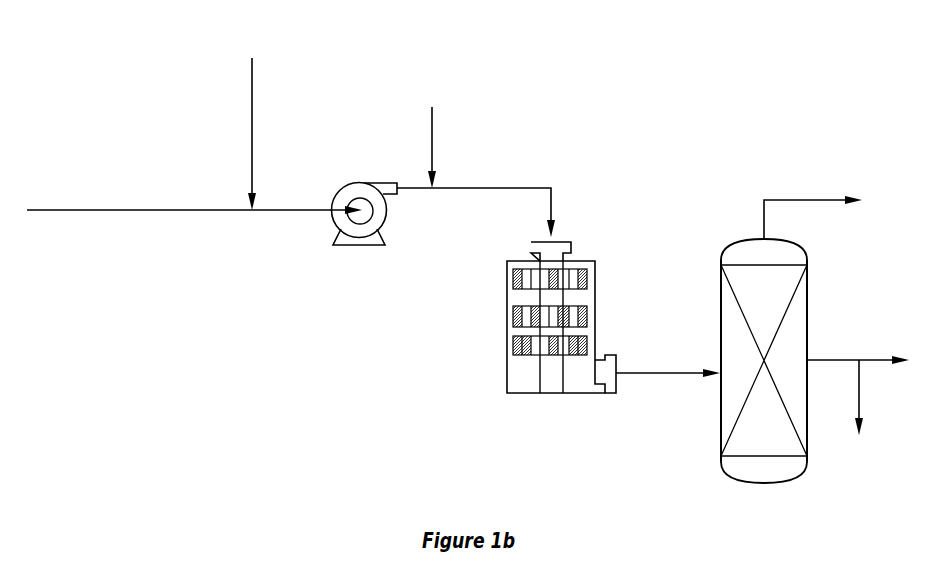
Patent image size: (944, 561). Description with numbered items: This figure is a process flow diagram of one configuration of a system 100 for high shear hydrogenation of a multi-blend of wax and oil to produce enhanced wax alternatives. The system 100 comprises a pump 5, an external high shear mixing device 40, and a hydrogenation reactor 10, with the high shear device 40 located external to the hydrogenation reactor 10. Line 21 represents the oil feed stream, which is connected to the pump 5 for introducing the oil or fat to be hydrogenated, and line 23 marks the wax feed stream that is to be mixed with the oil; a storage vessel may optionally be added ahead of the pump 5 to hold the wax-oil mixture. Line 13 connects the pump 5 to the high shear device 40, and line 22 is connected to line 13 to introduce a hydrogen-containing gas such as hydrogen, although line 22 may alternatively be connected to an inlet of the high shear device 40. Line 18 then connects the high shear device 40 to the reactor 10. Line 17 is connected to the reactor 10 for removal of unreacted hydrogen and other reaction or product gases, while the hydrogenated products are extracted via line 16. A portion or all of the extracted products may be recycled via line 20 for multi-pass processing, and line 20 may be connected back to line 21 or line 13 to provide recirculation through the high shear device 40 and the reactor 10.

The system 100 is at (690, 84).
The oil feed stream line 21 is at (155, 210).
The wax feed stream line 23 is at (252, 72).
The pump 5 is at (360, 182).
The hydrogen gas line 22 is at (432, 120).
The pump outlet line 13 is at (515, 188).
The external high shear mixing device 40 is at (588, 261).
The HSD outlet line 18 is at (688, 373).
The hydrogenation reactor 10 is at (808, 288).
The gas removal line 17 is at (798, 200).
The product extraction line 16 is at (832, 360).
The recycle line 20 is at (860, 401).